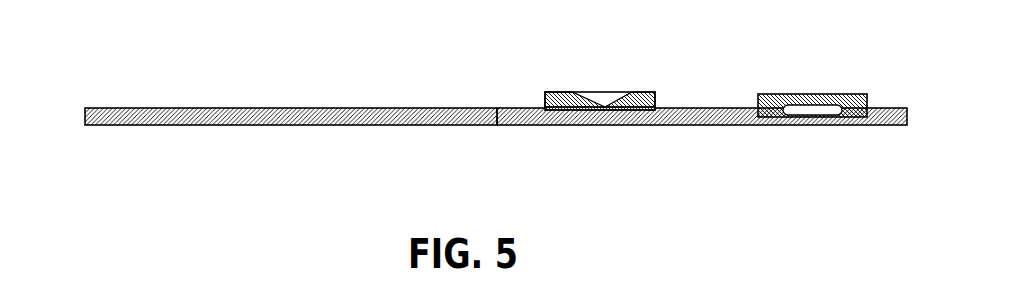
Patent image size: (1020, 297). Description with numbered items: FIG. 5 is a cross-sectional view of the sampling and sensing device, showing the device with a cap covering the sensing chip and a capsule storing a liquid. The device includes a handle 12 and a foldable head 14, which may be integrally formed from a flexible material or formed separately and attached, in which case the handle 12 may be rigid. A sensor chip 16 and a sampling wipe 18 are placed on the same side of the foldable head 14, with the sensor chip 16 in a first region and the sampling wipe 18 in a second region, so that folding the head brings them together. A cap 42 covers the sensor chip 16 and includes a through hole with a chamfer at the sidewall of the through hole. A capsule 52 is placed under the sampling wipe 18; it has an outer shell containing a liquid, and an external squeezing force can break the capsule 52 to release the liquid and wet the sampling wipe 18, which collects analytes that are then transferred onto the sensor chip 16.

The handle 12 is at (295, 117).
The foldable head 14 is at (693, 122).
The sensor chip 16 is at (611, 67).
The cap 42 is at (645, 108).
The sampling wipe 18 is at (806, 70).
The capsule 52 is at (825, 110).